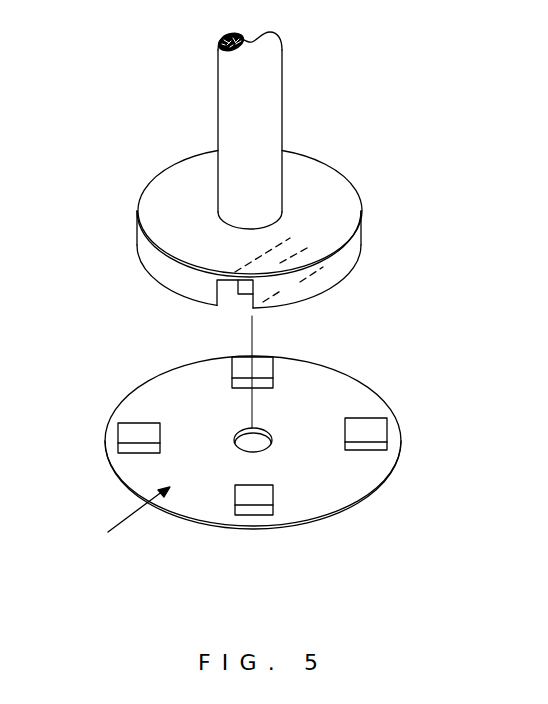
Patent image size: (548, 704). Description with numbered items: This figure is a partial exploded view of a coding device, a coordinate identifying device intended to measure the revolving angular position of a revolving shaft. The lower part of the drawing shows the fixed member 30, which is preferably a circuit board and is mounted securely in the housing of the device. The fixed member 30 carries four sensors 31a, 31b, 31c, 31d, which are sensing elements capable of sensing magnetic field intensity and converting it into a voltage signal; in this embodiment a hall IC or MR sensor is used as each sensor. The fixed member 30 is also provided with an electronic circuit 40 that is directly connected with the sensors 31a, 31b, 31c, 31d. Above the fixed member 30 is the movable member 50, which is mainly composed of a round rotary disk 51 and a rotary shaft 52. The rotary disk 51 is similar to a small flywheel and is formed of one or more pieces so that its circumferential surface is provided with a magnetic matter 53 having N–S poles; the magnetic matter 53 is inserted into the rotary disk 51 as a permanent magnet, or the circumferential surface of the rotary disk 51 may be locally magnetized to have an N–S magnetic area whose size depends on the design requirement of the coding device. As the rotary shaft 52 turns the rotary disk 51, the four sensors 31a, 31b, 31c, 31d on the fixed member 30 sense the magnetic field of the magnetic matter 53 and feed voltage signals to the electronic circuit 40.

The fixed member 30 is at (262, 448).
The sensor 31a is at (267, 372).
The sensor 31b is at (128, 430).
The sensor 31c is at (263, 497).
The sensor 31d is at (377, 430).
The electronic circuit 40 is at (97, 556).
The movable member 50 is at (253, 186).
The rotary disk 51 is at (148, 182).
The rotary shaft 52 is at (272, 105).
The magnetic matter 53 is at (242, 290).